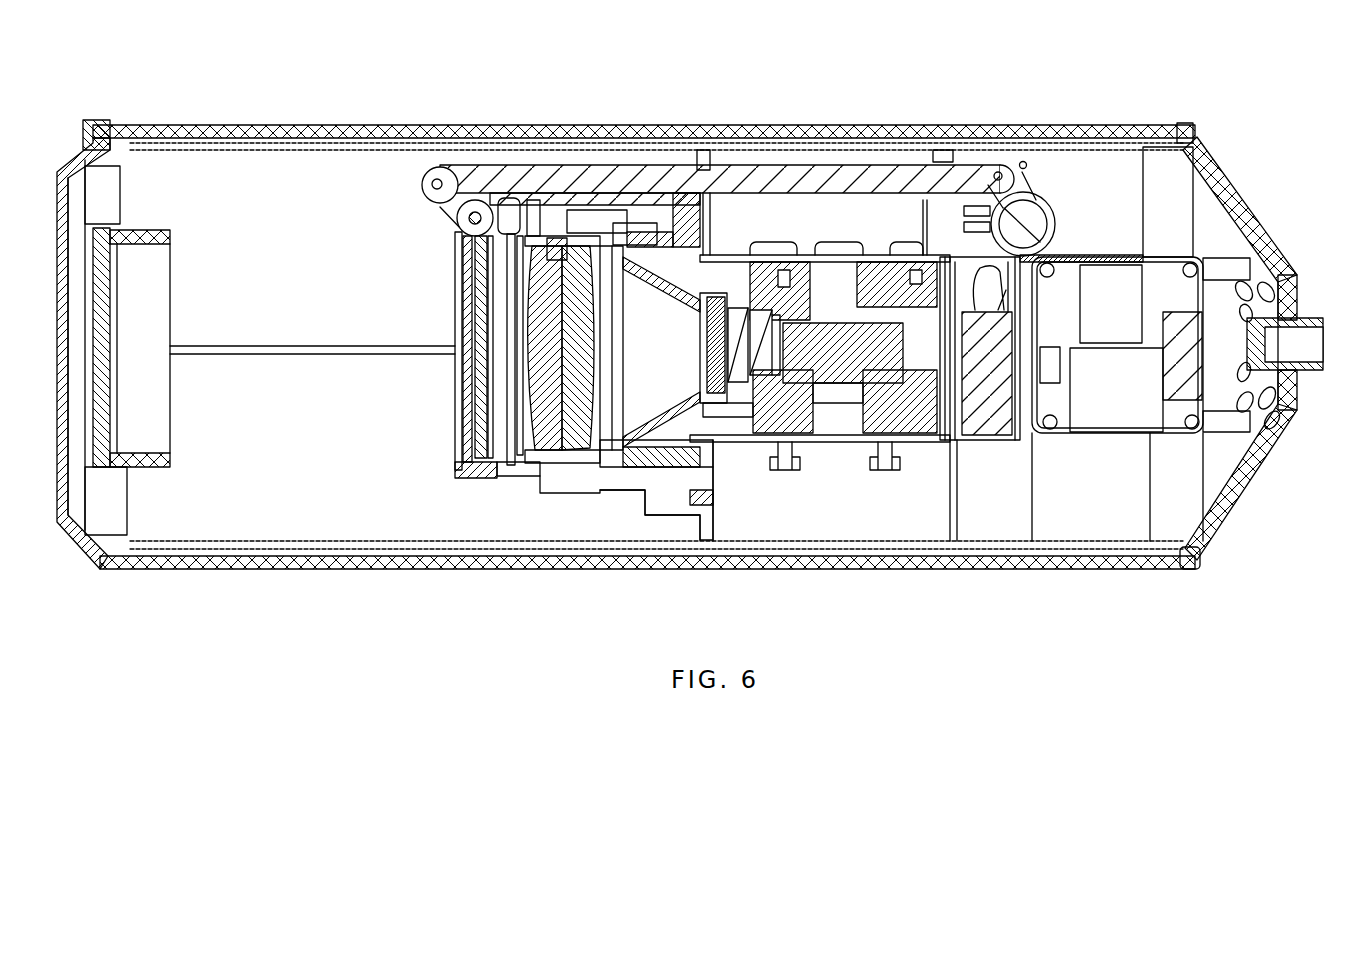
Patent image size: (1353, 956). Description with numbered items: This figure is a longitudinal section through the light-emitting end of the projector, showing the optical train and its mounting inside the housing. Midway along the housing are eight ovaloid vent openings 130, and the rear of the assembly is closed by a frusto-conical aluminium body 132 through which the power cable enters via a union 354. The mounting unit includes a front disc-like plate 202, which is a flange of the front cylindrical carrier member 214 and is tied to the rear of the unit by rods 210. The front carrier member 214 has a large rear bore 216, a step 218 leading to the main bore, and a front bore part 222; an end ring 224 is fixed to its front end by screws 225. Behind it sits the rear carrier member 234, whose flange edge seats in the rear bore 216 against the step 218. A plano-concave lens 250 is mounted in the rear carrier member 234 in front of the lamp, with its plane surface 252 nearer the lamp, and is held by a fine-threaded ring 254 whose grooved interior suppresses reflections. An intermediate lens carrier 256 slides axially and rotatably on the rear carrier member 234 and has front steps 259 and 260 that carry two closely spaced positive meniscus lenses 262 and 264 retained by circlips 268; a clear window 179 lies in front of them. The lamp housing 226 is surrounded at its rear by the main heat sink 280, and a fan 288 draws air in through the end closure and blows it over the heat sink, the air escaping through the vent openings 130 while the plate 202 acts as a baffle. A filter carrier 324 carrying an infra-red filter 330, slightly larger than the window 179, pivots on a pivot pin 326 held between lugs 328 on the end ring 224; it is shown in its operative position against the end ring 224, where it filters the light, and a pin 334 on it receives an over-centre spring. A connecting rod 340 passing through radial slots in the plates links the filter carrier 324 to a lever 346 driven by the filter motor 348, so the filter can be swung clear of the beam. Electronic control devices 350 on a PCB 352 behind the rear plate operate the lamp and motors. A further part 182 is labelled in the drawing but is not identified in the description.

The vent openings 130 is at (858, 250).
The frusto conical body 132 is at (1297, 408).
The clear window 179 is at (510, 330).
The mounting plate 182 is at (898, 290).
The front disc like plate 202 is at (717, 530).
The rods 210 is at (725, 265).
The front cylindrical carrier member 214 is at (632, 512).
The rear bore 216 is at (713, 503).
The step 218 is at (700, 498).
The front bore part 222 is at (542, 470).
The end ring 224 is at (520, 470).
The screws 225 is at (527, 473).
The lamp housing 226 is at (840, 383).
The rear carrier member 234 is at (712, 307).
The plano-concave lens 250 is at (703, 350).
The plane surface 252 is at (790, 307).
The ring 254 is at (707, 305).
The intermediate lens carrier 256 is at (670, 222).
The step 259 is at (615, 240).
The step 260 is at (505, 240).
The positive meniscus lens 262 is at (590, 400).
The positive meniscus lens 264 is at (543, 352).
The circlips 268 is at (560, 245).
The main heat sink 280 is at (920, 463).
The fan 288 is at (997, 413).
The filter carrier 324 is at (520, 467).
The pivot pin 326 is at (468, 225).
The lugs 328 is at (480, 234).
The infra-red filter 330 is at (483, 413).
The pin 334 is at (432, 198).
The connecting rod 340 is at (905, 190).
The lever 346 is at (1015, 190).
The filter motor 348 is at (1056, 226).
The electronic control devices 350 is at (1135, 417).
The PCB 352 is at (1186, 268).
The union 354 is at (1306, 316).